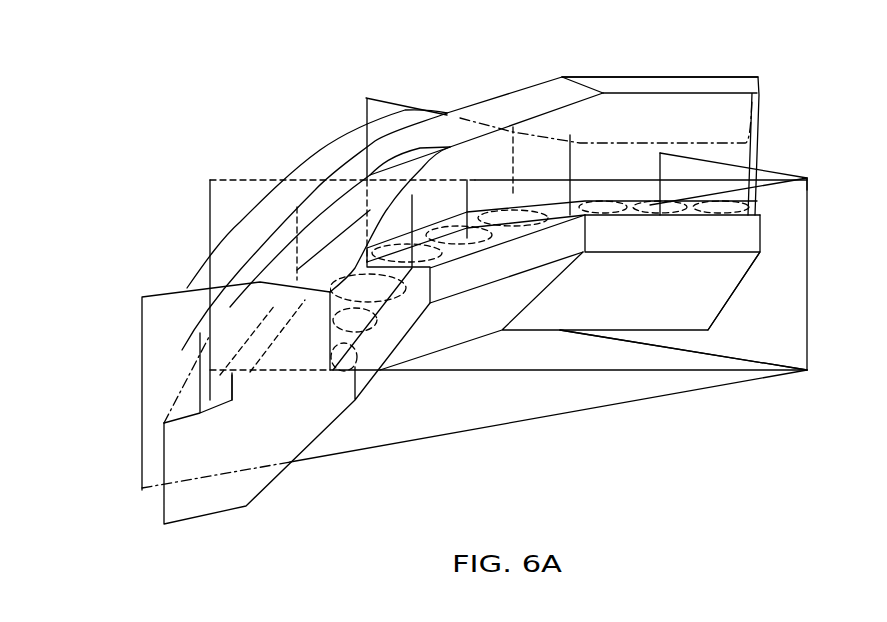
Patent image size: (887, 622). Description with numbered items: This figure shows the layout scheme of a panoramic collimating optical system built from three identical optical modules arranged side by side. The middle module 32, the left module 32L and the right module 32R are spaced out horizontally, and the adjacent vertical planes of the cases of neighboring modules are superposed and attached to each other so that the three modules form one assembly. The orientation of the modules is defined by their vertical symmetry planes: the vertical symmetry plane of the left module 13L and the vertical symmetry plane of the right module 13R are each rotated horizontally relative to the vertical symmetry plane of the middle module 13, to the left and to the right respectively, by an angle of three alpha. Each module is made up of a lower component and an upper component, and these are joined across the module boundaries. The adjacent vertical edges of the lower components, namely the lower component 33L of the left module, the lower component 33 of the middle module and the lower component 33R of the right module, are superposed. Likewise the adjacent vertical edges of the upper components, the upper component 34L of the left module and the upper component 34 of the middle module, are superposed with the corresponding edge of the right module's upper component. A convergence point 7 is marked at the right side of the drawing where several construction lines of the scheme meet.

The vertical symmetry plane of the middle module 13 is at (222, 178).
The vertical symmetry plane of the left module 13L is at (168, 307).
The vertical symmetry plane of the right module 13R is at (377, 112).
The upper component of the middle module 34 is at (470, 103).
The upper component of the left module 34L is at (643, 78).
The lower component of the middle module 33 is at (503, 125).
The lower component of the left module 33L is at (232, 380).
The lower component of the right module 33R is at (738, 97).
The middle module 32 is at (449, 343).
The left module 32L is at (314, 442).
The right module 32R is at (641, 330).
The convergence point 7 is at (801, 183).